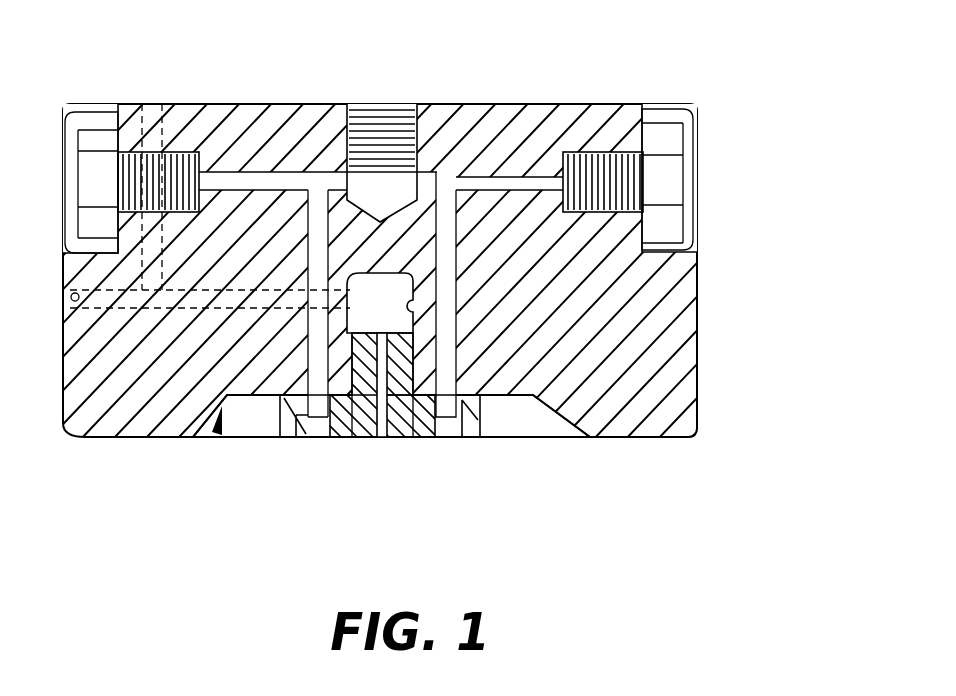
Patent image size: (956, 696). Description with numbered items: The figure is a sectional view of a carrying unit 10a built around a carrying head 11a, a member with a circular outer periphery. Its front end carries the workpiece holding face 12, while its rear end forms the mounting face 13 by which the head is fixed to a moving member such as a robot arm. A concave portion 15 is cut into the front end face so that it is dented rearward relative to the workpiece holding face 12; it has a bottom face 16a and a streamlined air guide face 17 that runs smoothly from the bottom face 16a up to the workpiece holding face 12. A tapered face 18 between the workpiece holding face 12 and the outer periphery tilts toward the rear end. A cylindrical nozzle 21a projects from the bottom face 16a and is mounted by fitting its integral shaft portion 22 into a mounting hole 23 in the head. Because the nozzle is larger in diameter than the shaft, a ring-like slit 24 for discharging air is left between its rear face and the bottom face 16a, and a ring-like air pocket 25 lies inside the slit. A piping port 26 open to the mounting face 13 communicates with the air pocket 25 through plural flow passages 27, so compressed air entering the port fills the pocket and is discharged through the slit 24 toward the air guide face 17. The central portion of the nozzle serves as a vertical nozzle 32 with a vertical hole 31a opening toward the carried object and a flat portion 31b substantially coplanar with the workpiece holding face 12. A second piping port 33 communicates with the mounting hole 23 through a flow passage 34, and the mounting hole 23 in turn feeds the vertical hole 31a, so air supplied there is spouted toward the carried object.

The carrying unit 10a is at (780, 107).
The carrying head 11a is at (740, 318).
The workpiece holding face 12 is at (625, 482).
The mounting face 13 is at (574, 103).
The concave portion 15 is at (205, 510).
The bottom face 16a is at (740, 366).
The air guide face 17 is at (558, 477).
The tapered face 18 is at (712, 468).
The cylindrical nozzle 21a is at (452, 520).
The shaft portion 22 is at (367, 328).
The mounting hole 23 is at (740, 268).
The slit 24 is at (262, 477).
The air pocket 25 is at (314, 485).
The piping port 26 is at (385, 103).
The flow passages 27 is at (318, 202).
The vertical hole 31a is at (385, 550).
The flat portion 31b is at (342, 520).
The vertical nozzle 32 is at (410, 478).
The piping port 33 is at (145, 103).
The flow passage 34 is at (141, 480).